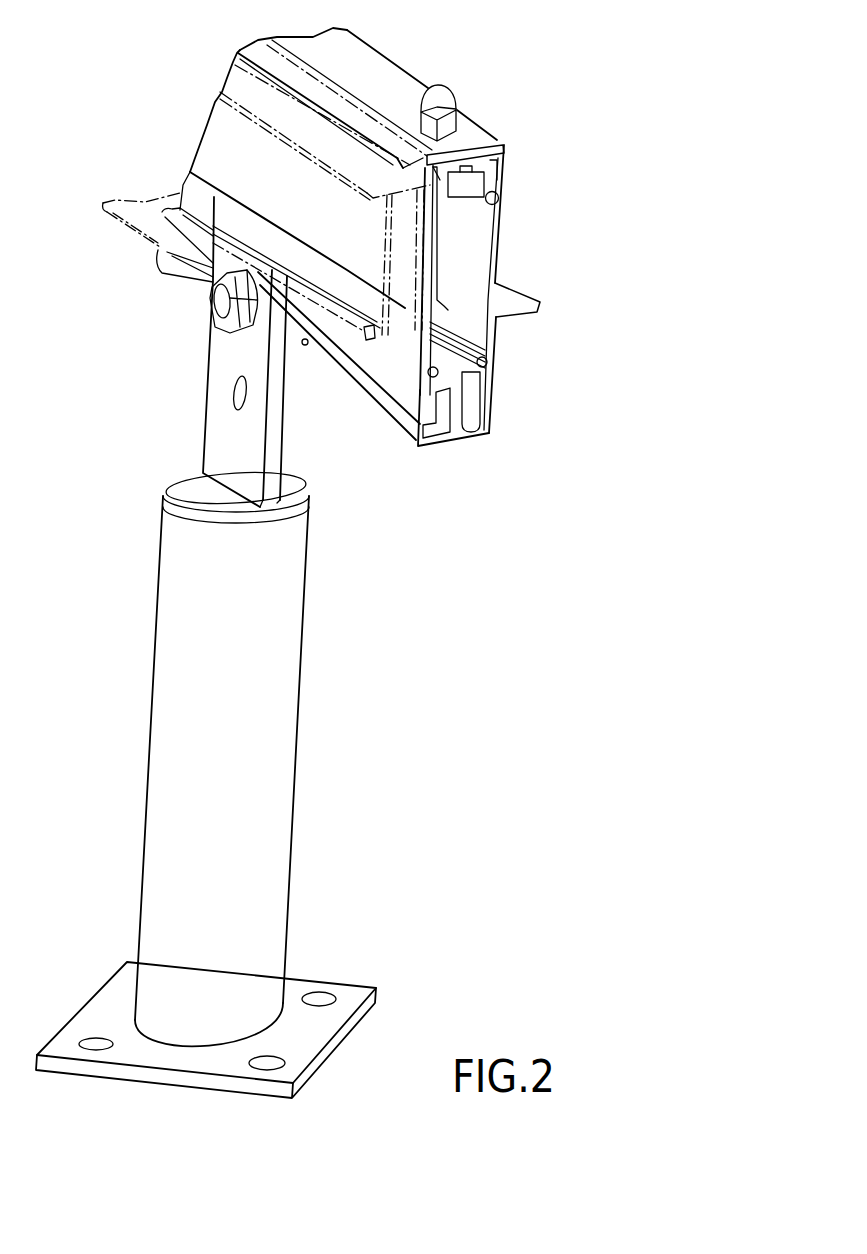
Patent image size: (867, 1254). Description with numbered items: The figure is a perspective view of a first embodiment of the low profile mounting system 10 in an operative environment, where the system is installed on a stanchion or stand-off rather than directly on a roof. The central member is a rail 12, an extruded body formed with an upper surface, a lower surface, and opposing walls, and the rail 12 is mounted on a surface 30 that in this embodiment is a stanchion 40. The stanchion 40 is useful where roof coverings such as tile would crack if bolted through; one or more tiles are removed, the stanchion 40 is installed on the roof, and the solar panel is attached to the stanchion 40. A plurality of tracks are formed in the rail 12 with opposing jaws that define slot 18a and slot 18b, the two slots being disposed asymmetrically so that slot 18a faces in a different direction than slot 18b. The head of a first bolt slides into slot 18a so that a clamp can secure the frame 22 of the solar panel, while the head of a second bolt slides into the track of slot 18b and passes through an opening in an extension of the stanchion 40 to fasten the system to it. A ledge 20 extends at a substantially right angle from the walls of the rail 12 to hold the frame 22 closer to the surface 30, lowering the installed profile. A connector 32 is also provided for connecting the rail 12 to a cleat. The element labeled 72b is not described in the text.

The low profile mounting system 10 is at (637, 193).
The rail 12 is at (500, 227).
The slot 18a is at (460, 187).
The slot 18b is at (427, 404).
The ledge 20 is at (518, 298).
The frame 22 is at (210, 140).
The surface 30 is at (207, 368).
The connector 32 is at (203, 313).
The stanchion 40 is at (310, 537).
The adjustment hole 72b is at (237, 393).